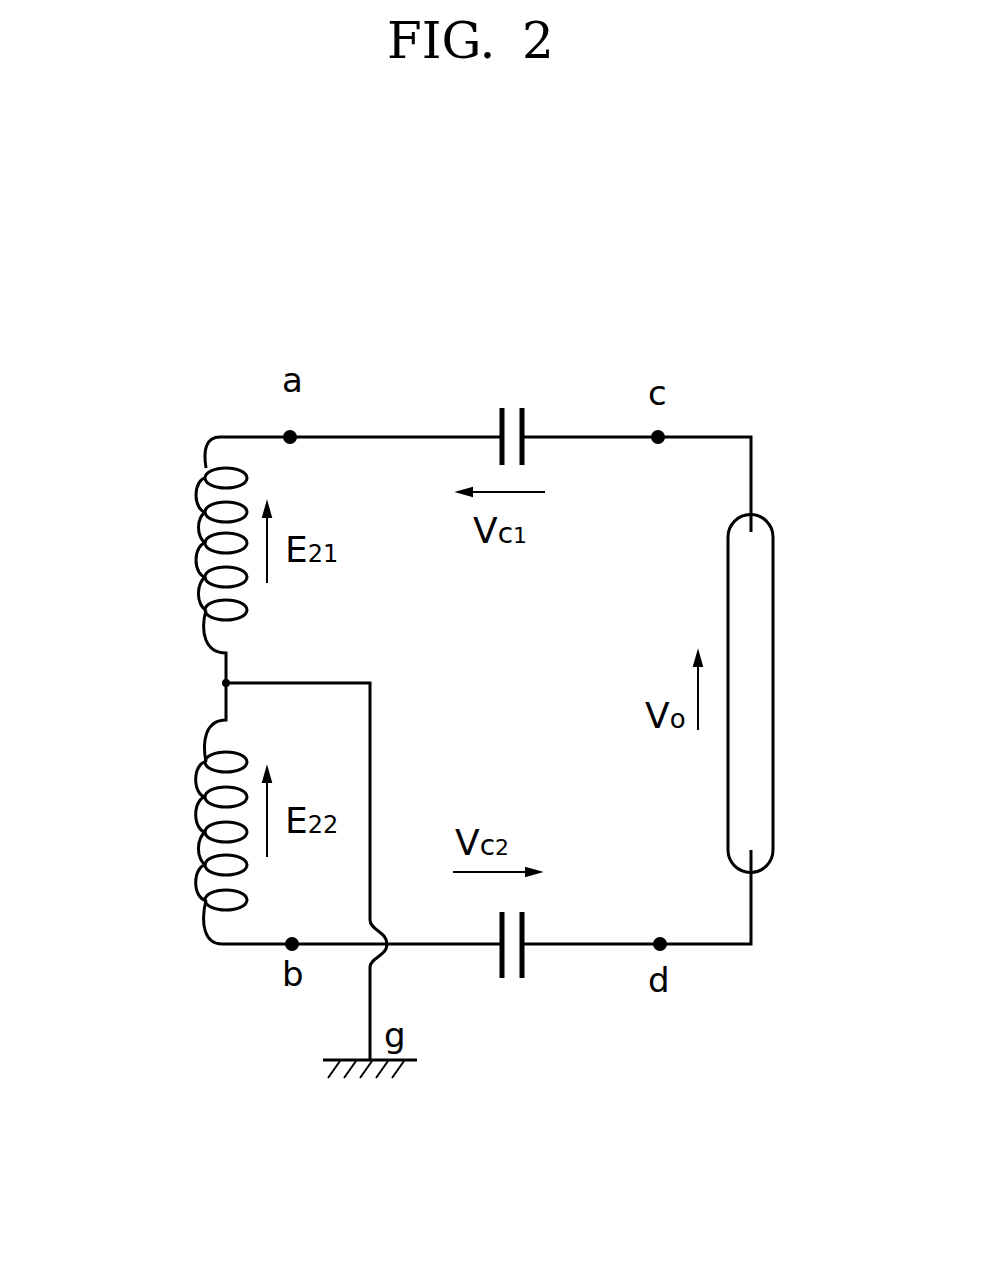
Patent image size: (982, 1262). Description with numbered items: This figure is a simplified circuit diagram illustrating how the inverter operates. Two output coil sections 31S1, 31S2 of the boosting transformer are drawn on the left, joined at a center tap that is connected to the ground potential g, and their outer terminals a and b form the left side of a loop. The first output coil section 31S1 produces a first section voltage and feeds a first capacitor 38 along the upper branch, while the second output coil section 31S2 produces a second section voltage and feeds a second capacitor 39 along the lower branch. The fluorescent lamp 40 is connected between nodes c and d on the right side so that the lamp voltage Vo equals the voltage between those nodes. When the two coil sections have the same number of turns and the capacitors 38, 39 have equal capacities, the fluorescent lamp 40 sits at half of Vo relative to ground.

The output coil section 31S1 is at (203, 520).
The output coil section 31S2 is at (203, 803).
The capacitor 38 is at (515, 406).
The capacitor 39 is at (515, 982).
The fluorescent lamp 40 is at (773, 705).